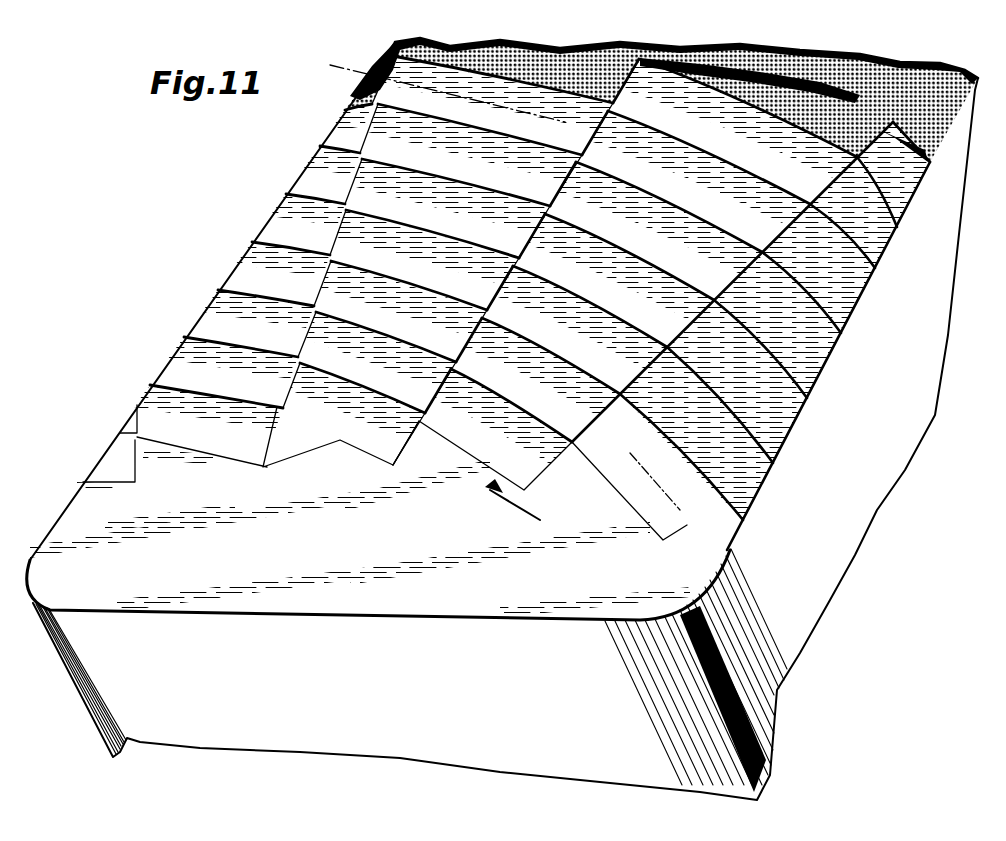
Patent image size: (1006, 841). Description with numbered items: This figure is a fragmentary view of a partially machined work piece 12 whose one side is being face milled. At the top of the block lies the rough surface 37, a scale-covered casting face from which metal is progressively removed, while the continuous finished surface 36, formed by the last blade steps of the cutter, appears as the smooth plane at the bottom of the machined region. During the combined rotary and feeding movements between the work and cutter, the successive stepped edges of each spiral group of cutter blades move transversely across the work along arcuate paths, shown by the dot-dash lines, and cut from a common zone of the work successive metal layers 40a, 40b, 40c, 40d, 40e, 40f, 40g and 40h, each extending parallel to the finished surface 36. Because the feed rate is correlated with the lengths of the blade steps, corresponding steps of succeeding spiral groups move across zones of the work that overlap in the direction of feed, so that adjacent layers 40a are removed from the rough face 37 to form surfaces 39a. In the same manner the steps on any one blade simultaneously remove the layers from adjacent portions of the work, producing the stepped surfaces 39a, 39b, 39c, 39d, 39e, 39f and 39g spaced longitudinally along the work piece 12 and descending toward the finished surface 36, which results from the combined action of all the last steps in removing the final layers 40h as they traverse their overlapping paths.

The work piece 12 is at (100, 673).
The finished surface 36 is at (80, 500).
The rough surface 37 is at (945, 108).
The stepped surface 39a is at (318, 120).
The stepped surface 39b is at (318, 148).
The stepped surface 39c is at (286, 196).
The stepped surface 39d is at (231, 266).
The stepped surface 39e is at (218, 292).
The stepped surface 39f is at (184, 340).
The stepped surface 39g is at (150, 388).
The metal layer 40a is at (624, 90).
The metal layer 40b is at (592, 137).
The metal layer 40c is at (560, 191).
The metal layer 40d is at (532, 244).
The metal layer 40e is at (499, 296).
The metal layer 40f is at (468, 350).
The metal layer 40g is at (442, 401).
The metal layer 40h is at (412, 432).